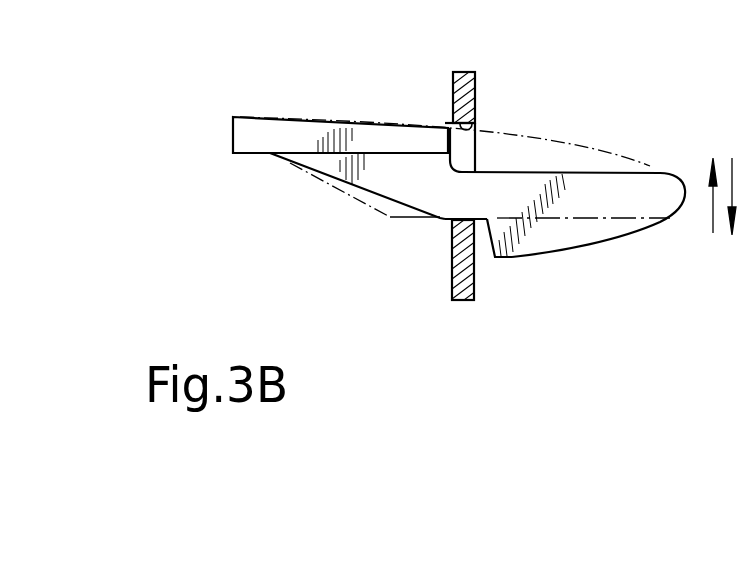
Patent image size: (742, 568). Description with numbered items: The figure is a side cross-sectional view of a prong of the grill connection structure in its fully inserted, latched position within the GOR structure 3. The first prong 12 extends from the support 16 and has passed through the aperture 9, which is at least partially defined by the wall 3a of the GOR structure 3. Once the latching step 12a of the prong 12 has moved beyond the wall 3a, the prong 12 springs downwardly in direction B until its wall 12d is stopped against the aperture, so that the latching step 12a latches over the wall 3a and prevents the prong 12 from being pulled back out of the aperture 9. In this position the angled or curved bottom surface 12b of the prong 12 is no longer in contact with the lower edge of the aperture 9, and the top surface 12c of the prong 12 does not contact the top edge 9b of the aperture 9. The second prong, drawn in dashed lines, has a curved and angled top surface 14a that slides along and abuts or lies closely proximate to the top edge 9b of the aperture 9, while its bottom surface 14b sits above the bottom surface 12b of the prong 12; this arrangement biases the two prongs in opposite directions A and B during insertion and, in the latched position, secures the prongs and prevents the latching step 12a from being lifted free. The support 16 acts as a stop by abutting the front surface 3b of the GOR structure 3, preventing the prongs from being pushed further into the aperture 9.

The GOR structure 3 is at (478, 210).
The wall of the GOR structure 3a is at (475, 93).
The front surface of the GOR wall 3b is at (452, 286).
The aperture 9 is at (467, 157).
The top edge of the aperture 9b is at (483, 127).
The first prong 12 is at (481, 234).
The latching step 12a is at (492, 238).
The bottom surface of prong 12b is at (597, 245).
The top surface of prong 12c is at (563, 173).
The wall of prong 12d is at (445, 222).
The top surface of prong 14a is at (650, 172).
The bottom surface of prong 14b is at (583, 258).
The support 16 is at (248, 140).
The direction A is at (714, 182).
The direction B is at (734, 215).